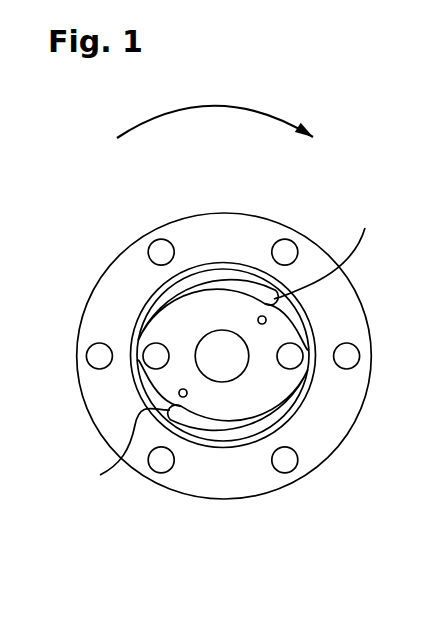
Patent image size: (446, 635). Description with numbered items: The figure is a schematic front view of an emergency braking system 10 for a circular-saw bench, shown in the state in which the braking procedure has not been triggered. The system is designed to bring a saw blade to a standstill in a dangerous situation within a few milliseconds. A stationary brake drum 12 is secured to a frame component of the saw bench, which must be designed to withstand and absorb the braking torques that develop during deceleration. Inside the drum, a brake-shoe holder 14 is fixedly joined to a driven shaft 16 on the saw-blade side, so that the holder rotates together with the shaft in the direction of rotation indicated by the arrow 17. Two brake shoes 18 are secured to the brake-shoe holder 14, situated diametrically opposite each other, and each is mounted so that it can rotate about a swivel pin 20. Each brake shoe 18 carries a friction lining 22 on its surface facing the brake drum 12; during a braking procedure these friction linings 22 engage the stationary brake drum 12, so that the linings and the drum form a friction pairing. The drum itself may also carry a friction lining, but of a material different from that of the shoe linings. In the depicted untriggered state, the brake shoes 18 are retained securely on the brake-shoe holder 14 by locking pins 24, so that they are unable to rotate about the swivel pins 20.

The emergency braking system 10 is at (353, 186).
The brake drum 12 is at (190, 220).
The brake-shoe holder 14 is at (180, 327).
The driven shaft 16 is at (221, 337).
The arrow 17 is at (209, 106).
The brake shoe 18 is at (229, 351).
The swivel pin 20 is at (289, 352).
The friction lining 22 is at (213, 283).
The locking pin 24 is at (262, 324).